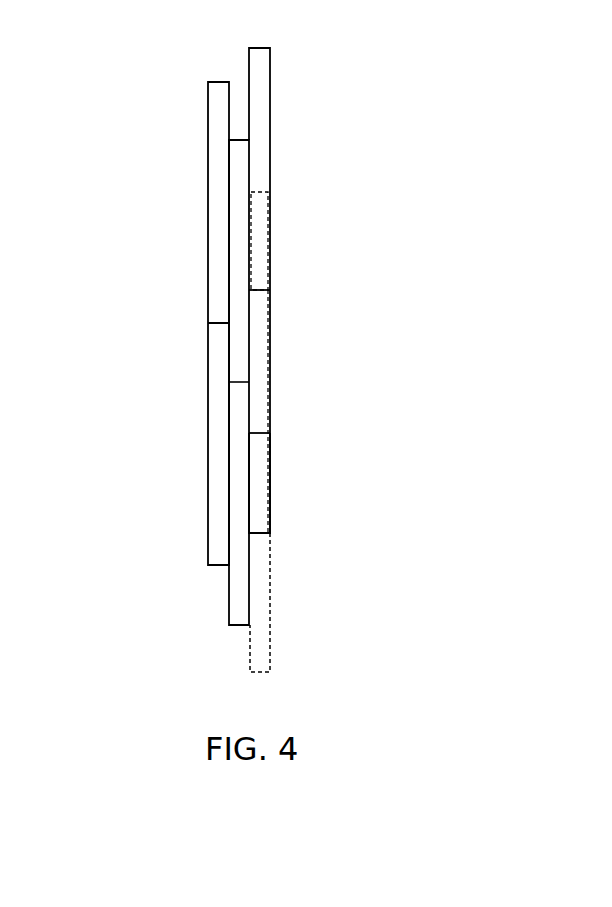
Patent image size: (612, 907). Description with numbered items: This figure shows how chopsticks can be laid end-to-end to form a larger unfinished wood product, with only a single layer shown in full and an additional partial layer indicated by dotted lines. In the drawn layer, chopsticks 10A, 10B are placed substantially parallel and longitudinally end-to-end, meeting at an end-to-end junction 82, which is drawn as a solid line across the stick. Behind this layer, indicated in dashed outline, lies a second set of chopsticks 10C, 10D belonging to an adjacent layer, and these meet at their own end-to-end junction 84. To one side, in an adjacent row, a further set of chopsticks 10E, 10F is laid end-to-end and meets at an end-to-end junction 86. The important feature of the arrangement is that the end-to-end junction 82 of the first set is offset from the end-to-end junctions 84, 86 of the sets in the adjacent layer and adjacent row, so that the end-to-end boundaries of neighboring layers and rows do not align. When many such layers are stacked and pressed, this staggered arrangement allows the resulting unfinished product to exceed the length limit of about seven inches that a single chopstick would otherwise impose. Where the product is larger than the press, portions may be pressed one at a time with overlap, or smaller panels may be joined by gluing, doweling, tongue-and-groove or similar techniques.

The chopstick 10A is at (260, 103).
The chopstick 10B is at (262, 495).
The chopstick 10C is at (263, 604).
The chopstick 10D is at (272, 260).
The chopstick 10E is at (236, 220).
The chopstick 10F is at (238, 469).
The end-to-end junction 82 is at (270, 290).
The end-to-end junction 84 is at (272, 430).
The end-to-end junction 86 is at (229, 381).